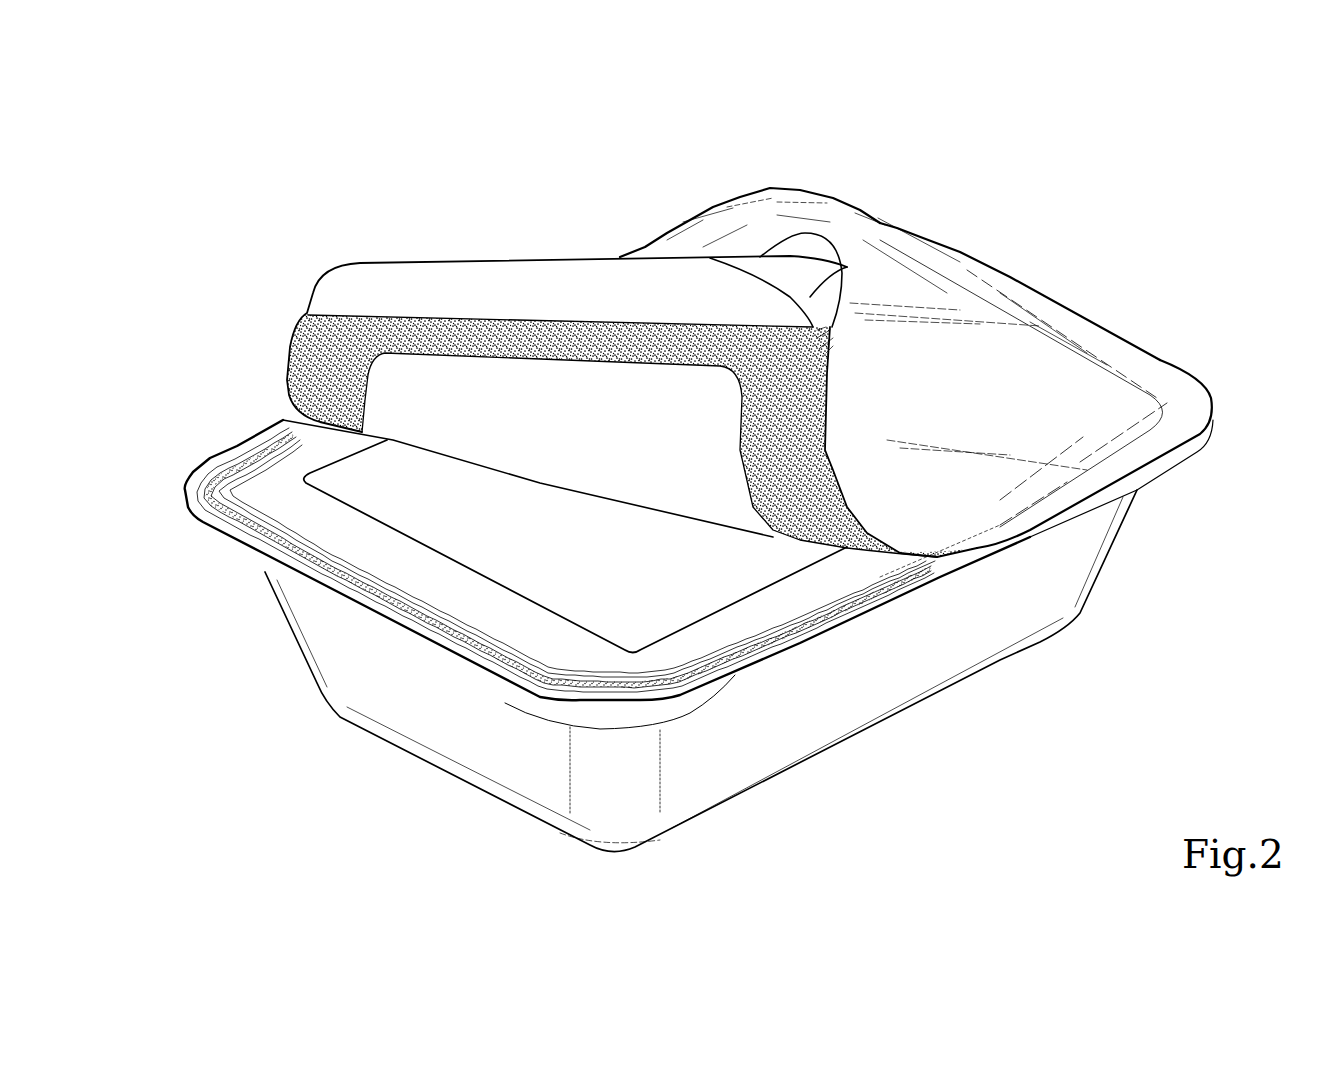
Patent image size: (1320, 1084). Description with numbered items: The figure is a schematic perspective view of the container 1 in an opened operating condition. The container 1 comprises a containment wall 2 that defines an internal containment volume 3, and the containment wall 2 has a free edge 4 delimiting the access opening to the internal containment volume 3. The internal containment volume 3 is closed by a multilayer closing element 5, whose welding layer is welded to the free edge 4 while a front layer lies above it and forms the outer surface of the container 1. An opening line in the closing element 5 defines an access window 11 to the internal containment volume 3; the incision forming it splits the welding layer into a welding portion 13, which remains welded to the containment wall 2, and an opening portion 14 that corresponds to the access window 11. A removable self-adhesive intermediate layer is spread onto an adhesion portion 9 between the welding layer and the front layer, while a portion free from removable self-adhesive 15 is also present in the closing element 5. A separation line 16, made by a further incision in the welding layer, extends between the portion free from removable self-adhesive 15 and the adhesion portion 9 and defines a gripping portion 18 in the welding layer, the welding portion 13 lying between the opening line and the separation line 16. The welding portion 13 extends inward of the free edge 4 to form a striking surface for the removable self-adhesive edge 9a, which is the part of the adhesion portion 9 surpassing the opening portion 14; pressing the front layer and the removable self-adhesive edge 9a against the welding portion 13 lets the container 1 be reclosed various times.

The container 1 is at (1141, 226).
The containment wall 2 is at (977, 628).
The internal containment volume 3 is at (385, 493).
The free edge 4 is at (686, 705).
The closing element 5 is at (1168, 353).
The adhesion portion 9 is at (517, 337).
The removable self-adhesive edge 9a is at (363, 333).
The access window 11 is at (480, 567).
The welding portion 13 is at (223, 530).
The opening portion 14 is at (603, 403).
The portion free from removable self-adhesive 15 is at (687, 290).
The separation line 16 is at (780, 287).
The gripping portion 18 is at (847, 267).